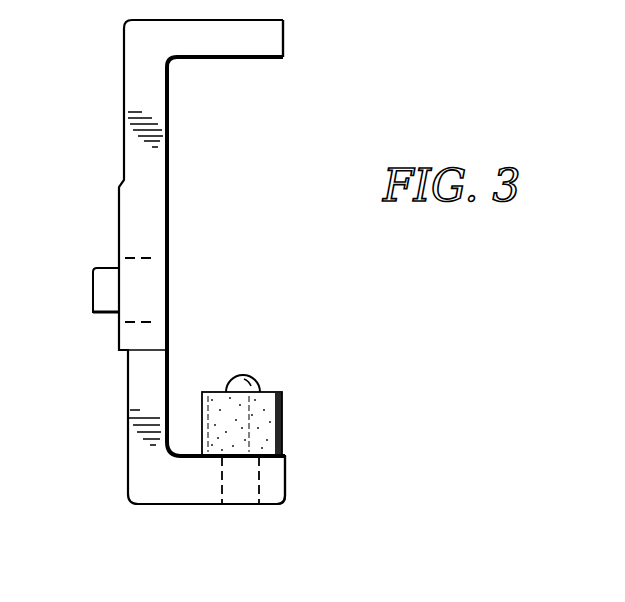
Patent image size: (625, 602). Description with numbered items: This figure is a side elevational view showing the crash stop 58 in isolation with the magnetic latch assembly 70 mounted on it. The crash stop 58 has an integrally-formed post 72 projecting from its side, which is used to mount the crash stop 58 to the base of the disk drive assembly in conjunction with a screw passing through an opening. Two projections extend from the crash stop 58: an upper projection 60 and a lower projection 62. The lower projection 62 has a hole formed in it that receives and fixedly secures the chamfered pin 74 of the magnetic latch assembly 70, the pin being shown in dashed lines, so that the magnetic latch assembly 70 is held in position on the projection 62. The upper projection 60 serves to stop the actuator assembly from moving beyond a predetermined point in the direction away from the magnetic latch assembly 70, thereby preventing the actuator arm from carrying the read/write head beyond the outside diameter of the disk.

The crash stop 58 is at (116, 157).
The projection 60 is at (275, 48).
The projection 62 is at (203, 495).
The magnetic latch assembly 70 is at (305, 442).
The integrally-formed post 72 is at (102, 299).
The chamfered pin 74 is at (259, 480).